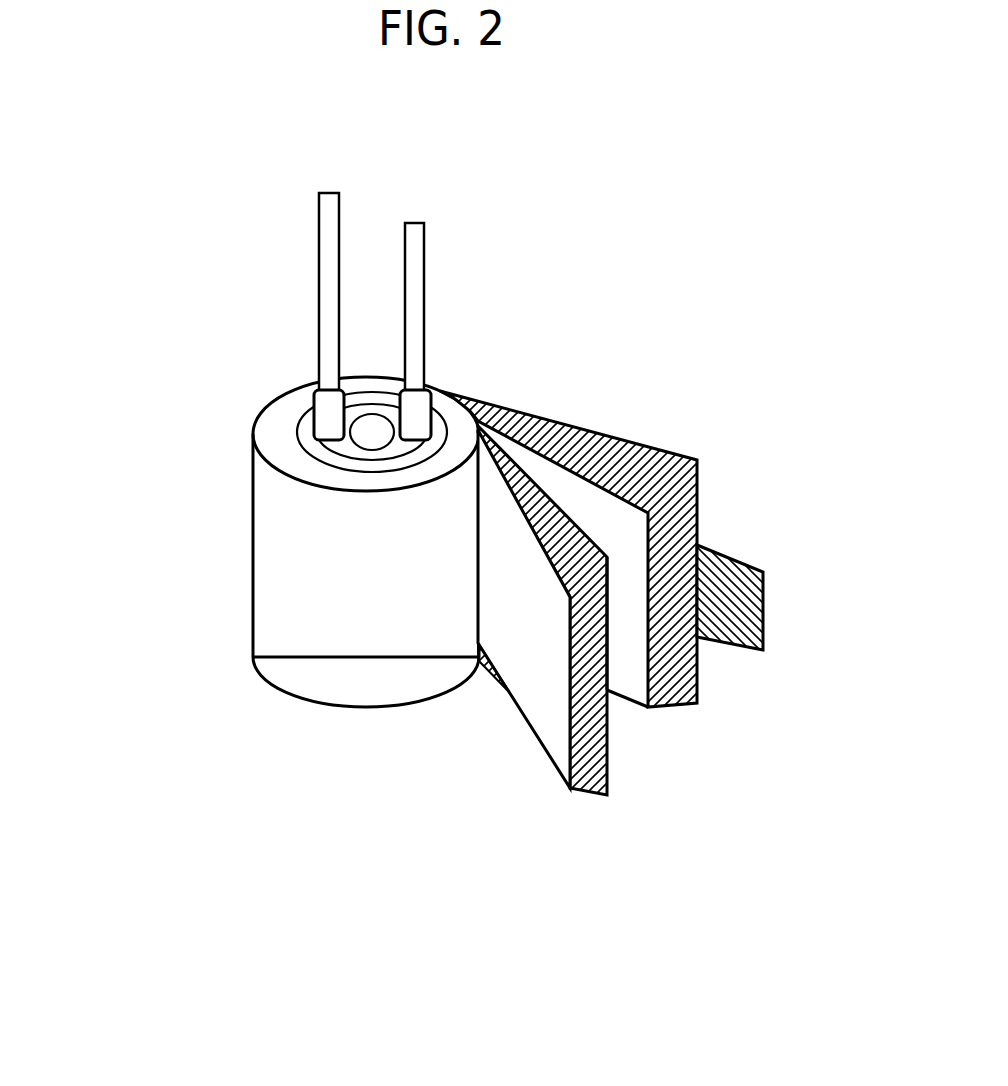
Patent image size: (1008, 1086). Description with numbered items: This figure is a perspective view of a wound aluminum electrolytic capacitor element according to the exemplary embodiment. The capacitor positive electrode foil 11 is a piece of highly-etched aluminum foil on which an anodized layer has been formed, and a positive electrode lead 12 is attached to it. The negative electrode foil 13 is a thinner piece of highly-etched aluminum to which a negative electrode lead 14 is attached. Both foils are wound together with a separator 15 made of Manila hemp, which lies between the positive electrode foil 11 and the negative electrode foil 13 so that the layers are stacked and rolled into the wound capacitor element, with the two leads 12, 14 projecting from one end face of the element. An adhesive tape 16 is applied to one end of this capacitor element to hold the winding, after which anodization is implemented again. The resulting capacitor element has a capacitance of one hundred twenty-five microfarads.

The capacitor positive electrode foil 11 is at (527, 657).
The positive electrode lead 12 is at (319, 284).
The negative electrode foil 13 is at (623, 670).
The negative electrode lead 14 is at (425, 252).
The separator 15 is at (527, 470).
The adhesive tape 16 is at (747, 598).